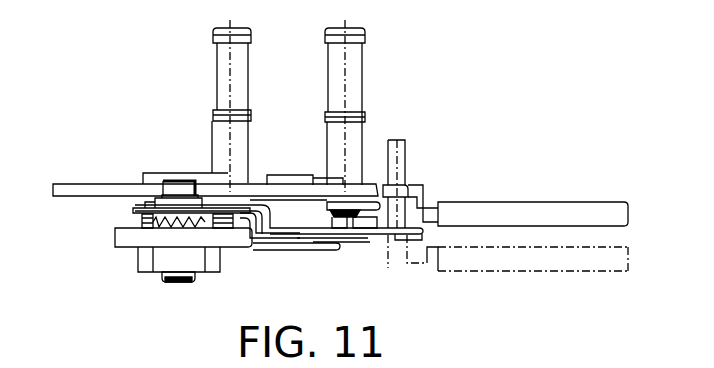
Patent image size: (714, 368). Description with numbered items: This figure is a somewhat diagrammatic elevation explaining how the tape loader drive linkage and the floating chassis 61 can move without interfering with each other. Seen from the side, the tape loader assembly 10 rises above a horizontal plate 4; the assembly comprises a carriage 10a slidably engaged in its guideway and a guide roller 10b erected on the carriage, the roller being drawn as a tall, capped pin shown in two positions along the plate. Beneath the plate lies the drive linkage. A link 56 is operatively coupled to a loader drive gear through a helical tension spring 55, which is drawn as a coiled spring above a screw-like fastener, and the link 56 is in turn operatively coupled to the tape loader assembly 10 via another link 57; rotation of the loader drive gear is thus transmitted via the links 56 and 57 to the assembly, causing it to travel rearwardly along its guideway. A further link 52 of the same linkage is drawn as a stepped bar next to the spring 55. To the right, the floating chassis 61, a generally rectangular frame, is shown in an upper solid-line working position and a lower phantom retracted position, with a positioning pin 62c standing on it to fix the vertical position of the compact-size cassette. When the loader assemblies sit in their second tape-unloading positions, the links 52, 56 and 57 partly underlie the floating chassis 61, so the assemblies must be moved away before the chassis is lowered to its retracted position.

The base plate 4 is at (100, 184).
The tape loader assembly 10 is at (212, 138).
The carriage 10a is at (175, 173).
The guide roller 10b is at (218, 82).
The link 52 is at (254, 234).
The helical tension spring 55 is at (140, 261).
The link 56 is at (287, 235).
The link 57 is at (372, 232).
The floating chassis 61 is at (540, 201).
The positioning pin 62c is at (403, 150).